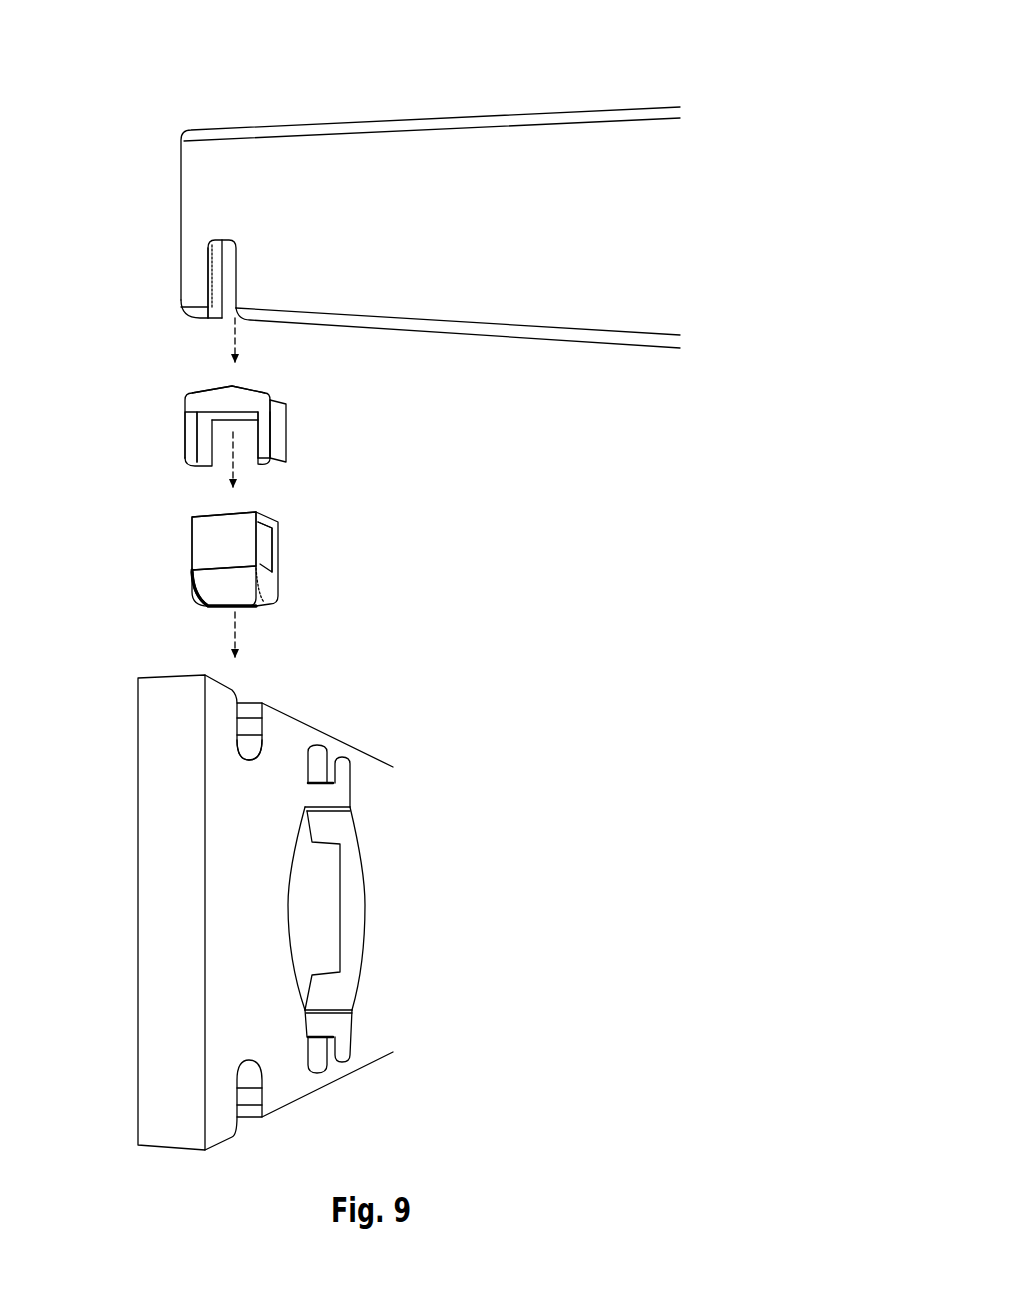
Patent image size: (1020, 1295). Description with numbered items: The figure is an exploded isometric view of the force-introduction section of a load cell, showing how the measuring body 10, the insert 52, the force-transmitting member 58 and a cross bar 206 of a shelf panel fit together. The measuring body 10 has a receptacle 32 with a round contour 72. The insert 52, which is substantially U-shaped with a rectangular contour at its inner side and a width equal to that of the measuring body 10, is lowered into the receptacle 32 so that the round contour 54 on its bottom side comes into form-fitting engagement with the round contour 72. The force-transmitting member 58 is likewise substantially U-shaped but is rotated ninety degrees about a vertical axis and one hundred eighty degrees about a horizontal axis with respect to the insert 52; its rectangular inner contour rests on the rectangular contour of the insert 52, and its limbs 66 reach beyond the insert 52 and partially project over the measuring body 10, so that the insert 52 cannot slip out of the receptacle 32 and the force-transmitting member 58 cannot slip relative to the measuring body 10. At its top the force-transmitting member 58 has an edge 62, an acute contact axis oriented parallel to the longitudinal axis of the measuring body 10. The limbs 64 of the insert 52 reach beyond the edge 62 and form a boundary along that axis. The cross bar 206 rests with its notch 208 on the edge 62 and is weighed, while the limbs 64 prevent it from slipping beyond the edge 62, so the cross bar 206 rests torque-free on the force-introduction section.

The measuring body 10 is at (225, 918).
The receptacle 32 is at (255, 693).
The insert 52 is at (310, 600).
The round contour 54 is at (210, 617).
The force-transmitting member 58 is at (246, 404).
The edge 62 is at (243, 383).
The limbs 64 is at (213, 543).
The limbs 66 is at (190, 442).
The round contour 72 is at (247, 770).
The cross bar 206 is at (487, 180).
The notch 208 is at (207, 322).